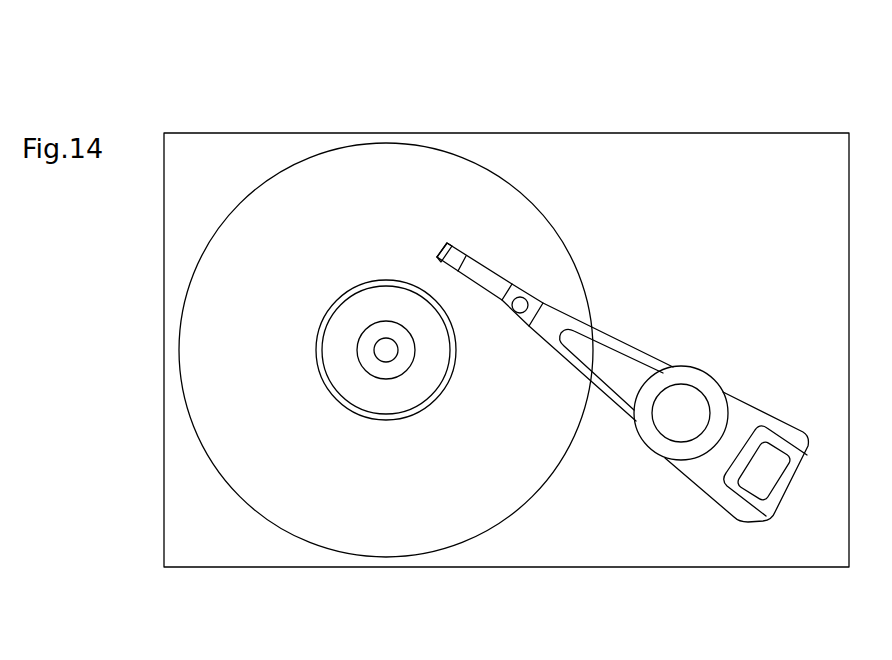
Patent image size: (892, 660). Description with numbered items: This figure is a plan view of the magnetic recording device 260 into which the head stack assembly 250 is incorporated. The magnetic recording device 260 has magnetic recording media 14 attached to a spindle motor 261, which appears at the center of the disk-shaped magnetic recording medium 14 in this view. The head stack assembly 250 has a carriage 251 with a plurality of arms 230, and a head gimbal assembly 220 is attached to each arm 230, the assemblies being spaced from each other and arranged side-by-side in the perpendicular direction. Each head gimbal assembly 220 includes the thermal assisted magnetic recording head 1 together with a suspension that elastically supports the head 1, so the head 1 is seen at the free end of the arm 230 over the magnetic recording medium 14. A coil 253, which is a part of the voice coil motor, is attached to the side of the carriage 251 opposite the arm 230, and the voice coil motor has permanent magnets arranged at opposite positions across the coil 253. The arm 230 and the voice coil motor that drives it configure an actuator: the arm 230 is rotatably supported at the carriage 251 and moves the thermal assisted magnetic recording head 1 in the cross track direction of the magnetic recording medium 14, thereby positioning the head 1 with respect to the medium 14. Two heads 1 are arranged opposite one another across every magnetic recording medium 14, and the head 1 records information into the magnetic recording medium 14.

The thermal assisted magnetic recording head 1 is at (458, 243).
The magnetic recording medium 14 is at (310, 544).
The head gimbal assembly 220 is at (490, 302).
The arm 230 is at (614, 404).
The head stack assembly 250 is at (685, 478).
The carriage 251 is at (689, 367).
The coil 253 is at (791, 488).
The magnetic recording device 260 is at (547, 100).
The spindle motor 261 is at (386, 352).